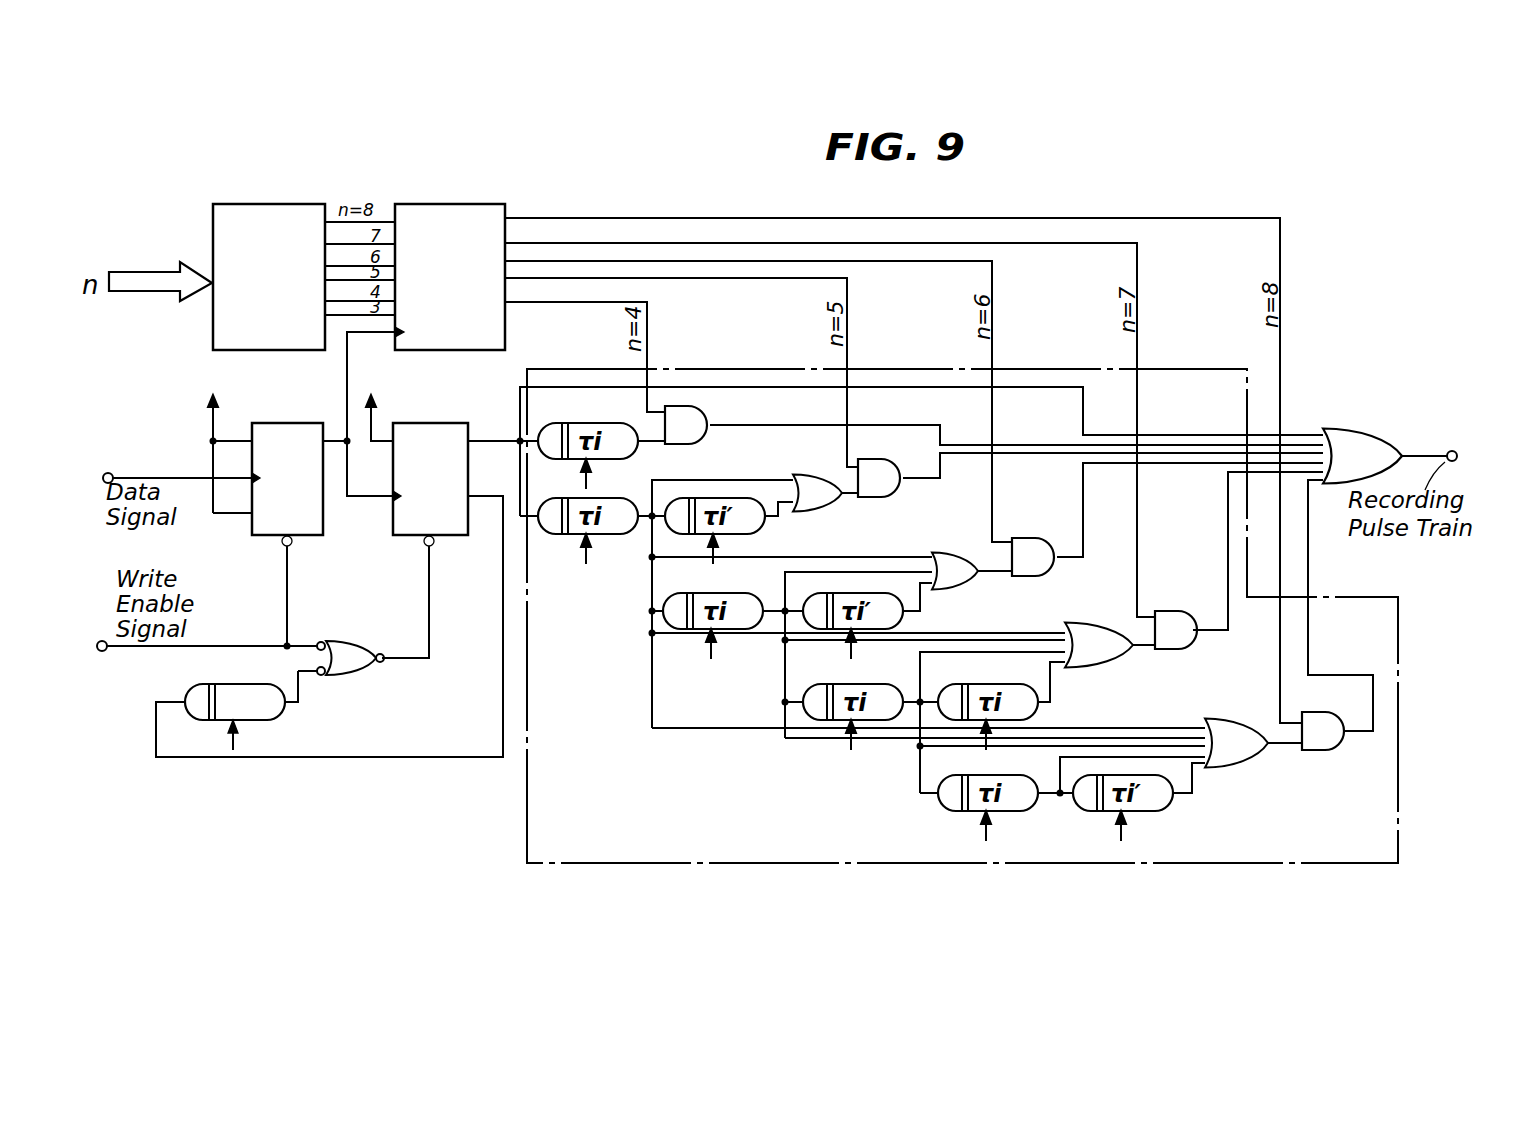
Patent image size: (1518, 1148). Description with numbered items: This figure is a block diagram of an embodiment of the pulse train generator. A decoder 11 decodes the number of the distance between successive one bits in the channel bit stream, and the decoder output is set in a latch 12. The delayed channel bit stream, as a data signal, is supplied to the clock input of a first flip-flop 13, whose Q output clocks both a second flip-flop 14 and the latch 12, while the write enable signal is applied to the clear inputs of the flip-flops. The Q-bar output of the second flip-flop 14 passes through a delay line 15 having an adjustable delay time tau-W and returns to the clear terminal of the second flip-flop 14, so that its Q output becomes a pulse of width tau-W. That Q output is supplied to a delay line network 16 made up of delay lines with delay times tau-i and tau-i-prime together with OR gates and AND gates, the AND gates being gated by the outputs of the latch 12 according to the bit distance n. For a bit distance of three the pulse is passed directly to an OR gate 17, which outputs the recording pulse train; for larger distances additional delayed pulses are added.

The decoder 11 is at (289, 207).
The latch 12 is at (478, 207).
The first flip-flop 13 is at (291, 423).
The second flip-flop 14 is at (431, 432).
The delay line 15 is at (268, 711).
The delay line network 16 is at (800, 866).
The OR gate 17 is at (1358, 437).